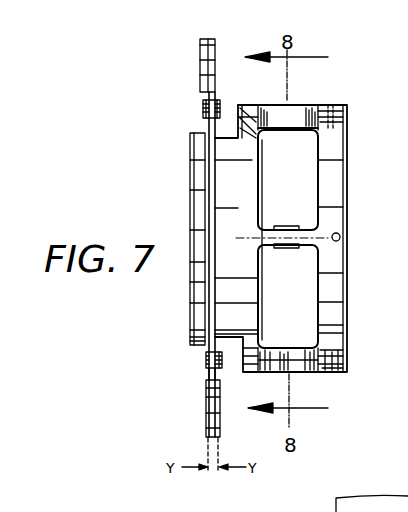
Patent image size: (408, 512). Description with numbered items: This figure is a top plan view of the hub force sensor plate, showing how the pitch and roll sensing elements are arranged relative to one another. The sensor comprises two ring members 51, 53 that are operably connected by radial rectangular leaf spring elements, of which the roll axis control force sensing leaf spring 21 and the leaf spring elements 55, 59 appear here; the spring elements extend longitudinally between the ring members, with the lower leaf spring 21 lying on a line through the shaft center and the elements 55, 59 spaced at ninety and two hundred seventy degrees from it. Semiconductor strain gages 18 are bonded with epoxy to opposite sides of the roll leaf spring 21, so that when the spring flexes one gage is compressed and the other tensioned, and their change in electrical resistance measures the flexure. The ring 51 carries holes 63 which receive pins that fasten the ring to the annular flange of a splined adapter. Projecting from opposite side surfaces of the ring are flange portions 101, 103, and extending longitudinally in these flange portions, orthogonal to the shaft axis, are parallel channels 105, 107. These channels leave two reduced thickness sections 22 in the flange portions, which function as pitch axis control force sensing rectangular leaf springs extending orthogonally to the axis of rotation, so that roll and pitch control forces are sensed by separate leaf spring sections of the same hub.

The semiconductor strain gages 18 is at (279, 260).
The roll axis control force sensing leaf spring 21 is at (305, 246).
The pitch axis control force sensing rectangular leaf spring 22 is at (206, 98).
The ring member 51 is at (347, 170).
The ring member 53 is at (246, 110).
The radial rectangular leaf spring element 55 is at (300, 106).
The radial rectangular leaf spring element 59 is at (303, 362).
The holes 63 is at (334, 101).
The flange portion 101 is at (200, 60).
The flange portion 103 is at (207, 420).
The channel 105 is at (207, 128).
The channel 107 is at (208, 381).